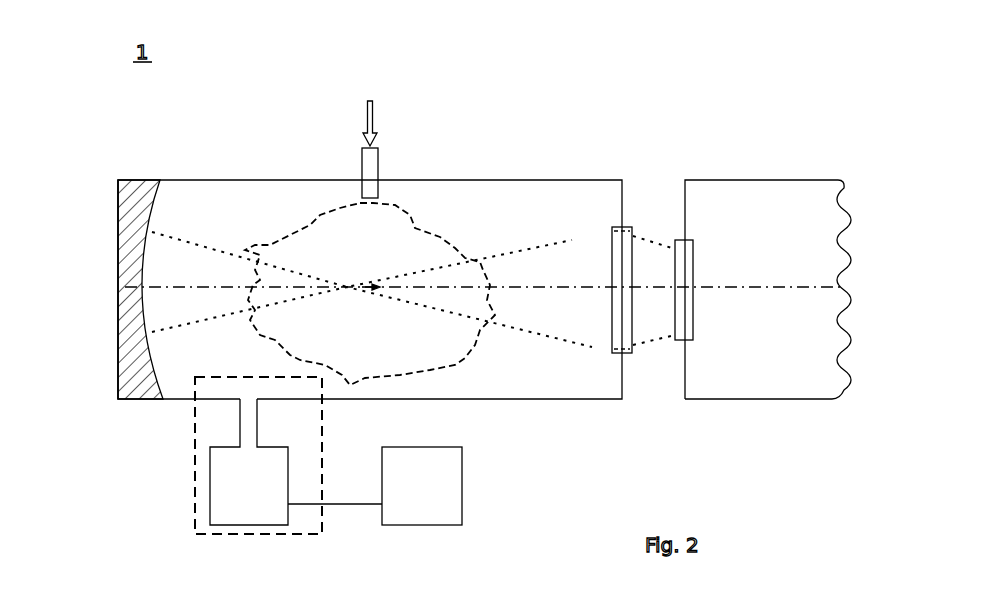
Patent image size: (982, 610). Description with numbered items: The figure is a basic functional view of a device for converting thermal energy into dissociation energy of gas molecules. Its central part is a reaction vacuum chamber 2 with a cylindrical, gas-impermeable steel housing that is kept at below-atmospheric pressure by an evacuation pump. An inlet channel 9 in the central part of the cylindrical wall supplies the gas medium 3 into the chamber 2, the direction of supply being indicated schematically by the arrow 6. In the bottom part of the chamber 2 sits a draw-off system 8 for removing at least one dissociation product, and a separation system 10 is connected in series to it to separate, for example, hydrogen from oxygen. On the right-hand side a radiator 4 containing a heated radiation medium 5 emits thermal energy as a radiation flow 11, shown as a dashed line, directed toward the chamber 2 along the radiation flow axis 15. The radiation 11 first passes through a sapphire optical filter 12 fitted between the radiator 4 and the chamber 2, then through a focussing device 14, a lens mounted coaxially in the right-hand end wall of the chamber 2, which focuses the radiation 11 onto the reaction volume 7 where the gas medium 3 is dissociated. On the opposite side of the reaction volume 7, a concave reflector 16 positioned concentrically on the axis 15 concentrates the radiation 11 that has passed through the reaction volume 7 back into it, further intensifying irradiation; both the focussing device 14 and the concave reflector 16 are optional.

The reaction vacuum chamber 2 is at (502, 180).
The gas medium 3 is at (190, 193).
The radiator 4 is at (810, 180).
The radiation medium 5 is at (810, 245).
The arrow 6 is at (370, 111).
The reaction volume 7 is at (303, 230).
The draw-off system 8 is at (195, 452).
The inlet channel 9 is at (362, 165).
The separation system 10 is at (462, 478).
The radiation flow 11 is at (572, 240).
The optical filter 12 is at (697, 243).
The focussing device 14 is at (612, 253).
The radiation flow axis 15 is at (747, 288).
The concave reflector 16 is at (118, 370).